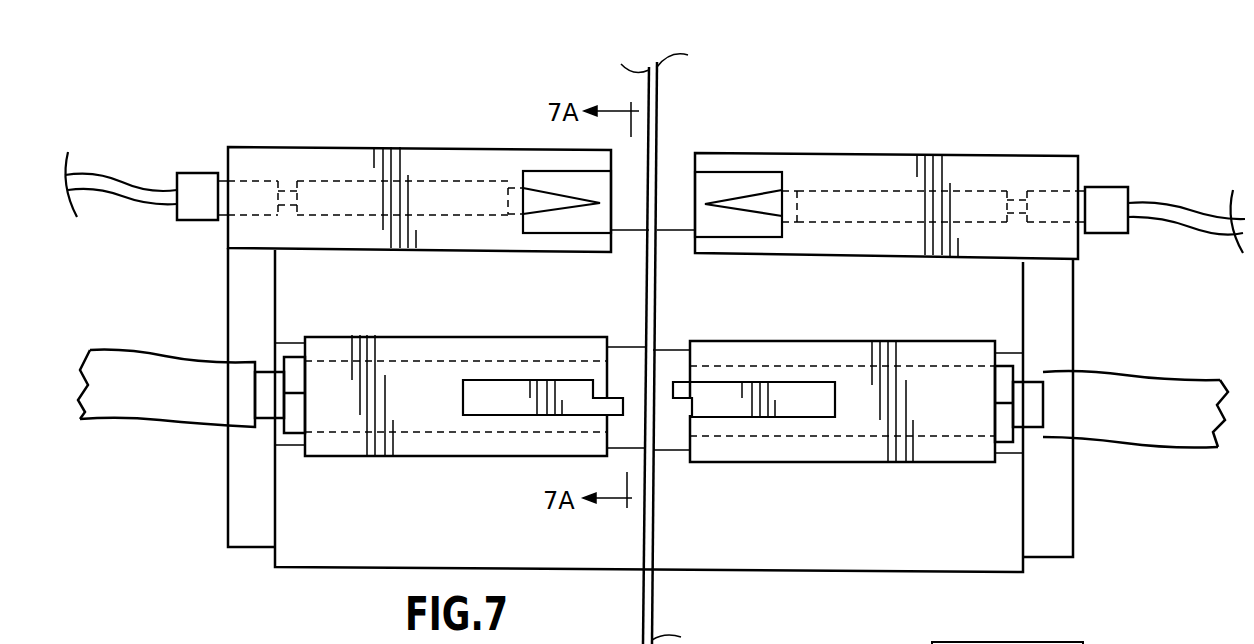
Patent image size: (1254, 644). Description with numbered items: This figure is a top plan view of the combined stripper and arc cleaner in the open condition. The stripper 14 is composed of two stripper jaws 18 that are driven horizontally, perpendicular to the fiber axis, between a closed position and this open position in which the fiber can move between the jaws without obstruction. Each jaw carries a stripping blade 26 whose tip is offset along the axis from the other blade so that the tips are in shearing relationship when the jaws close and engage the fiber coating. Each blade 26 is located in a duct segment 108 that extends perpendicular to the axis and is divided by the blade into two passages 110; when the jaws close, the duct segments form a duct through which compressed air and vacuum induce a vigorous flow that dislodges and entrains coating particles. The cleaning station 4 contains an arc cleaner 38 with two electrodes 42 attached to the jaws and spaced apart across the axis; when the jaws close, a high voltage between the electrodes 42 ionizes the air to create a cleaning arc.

The cleaning station 4 is at (791, 123).
The stripper 14 is at (742, 512).
The stripper jaws 18 is at (337, 345).
The stripping blade 26 is at (502, 390).
The arc cleaner 38 is at (435, 243).
The electrodes 42 is at (563, 208).
The duct segment 108 is at (420, 433).
The passages 110 is at (575, 372).